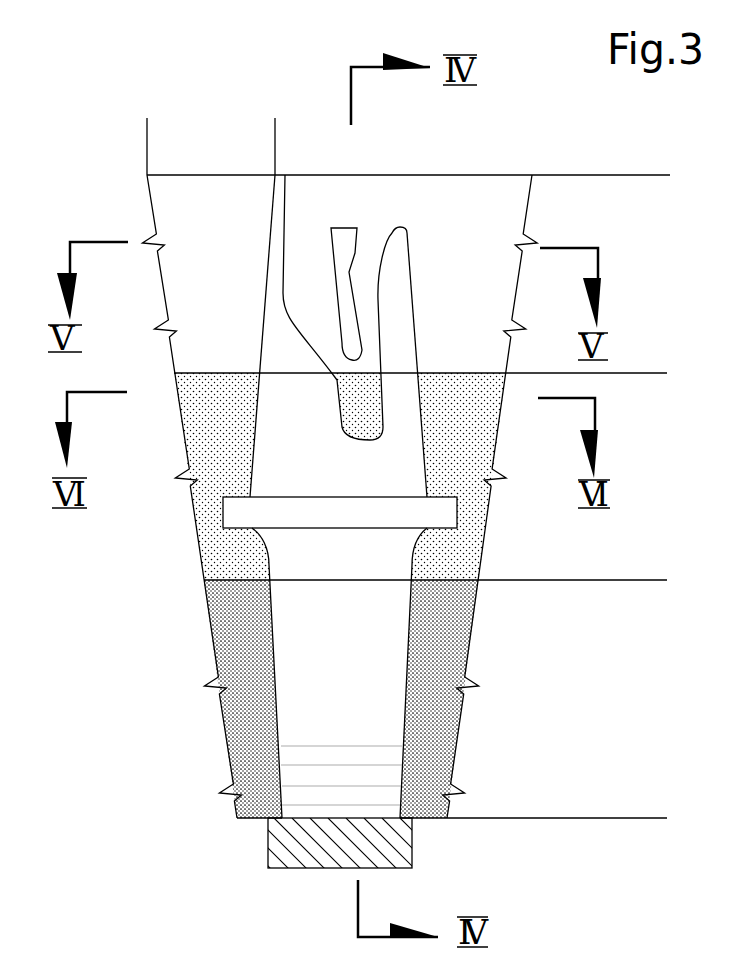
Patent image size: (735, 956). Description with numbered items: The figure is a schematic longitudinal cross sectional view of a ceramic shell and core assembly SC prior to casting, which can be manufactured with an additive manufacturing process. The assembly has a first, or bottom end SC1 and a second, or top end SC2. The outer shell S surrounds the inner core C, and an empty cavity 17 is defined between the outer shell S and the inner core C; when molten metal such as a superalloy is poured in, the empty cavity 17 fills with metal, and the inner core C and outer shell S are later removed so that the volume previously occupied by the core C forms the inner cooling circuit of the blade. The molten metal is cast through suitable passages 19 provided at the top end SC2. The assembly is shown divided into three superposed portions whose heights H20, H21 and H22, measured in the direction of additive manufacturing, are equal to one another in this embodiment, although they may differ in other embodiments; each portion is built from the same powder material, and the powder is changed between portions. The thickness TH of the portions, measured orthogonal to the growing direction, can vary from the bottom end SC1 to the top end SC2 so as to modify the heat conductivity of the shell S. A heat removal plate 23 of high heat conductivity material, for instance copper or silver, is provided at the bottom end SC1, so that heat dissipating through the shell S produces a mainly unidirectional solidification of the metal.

The empty cavity 17 is at (285, 455).
The passages 19 is at (280, 175).
The heat removal plate 23 is at (302, 857).
The inner core C is at (307, 262).
The outer shell S is at (468, 440).
The shell and core assembly SC is at (178, 522).
The first, bottom end SC1 is at (257, 820).
The second, top end SC2 is at (198, 175).
The thickness TH is at (275, 127).
The height of first portion H20 is at (658, 580).
The height of second portion H21 is at (658, 373).
The height of third portion H22 is at (658, 175).